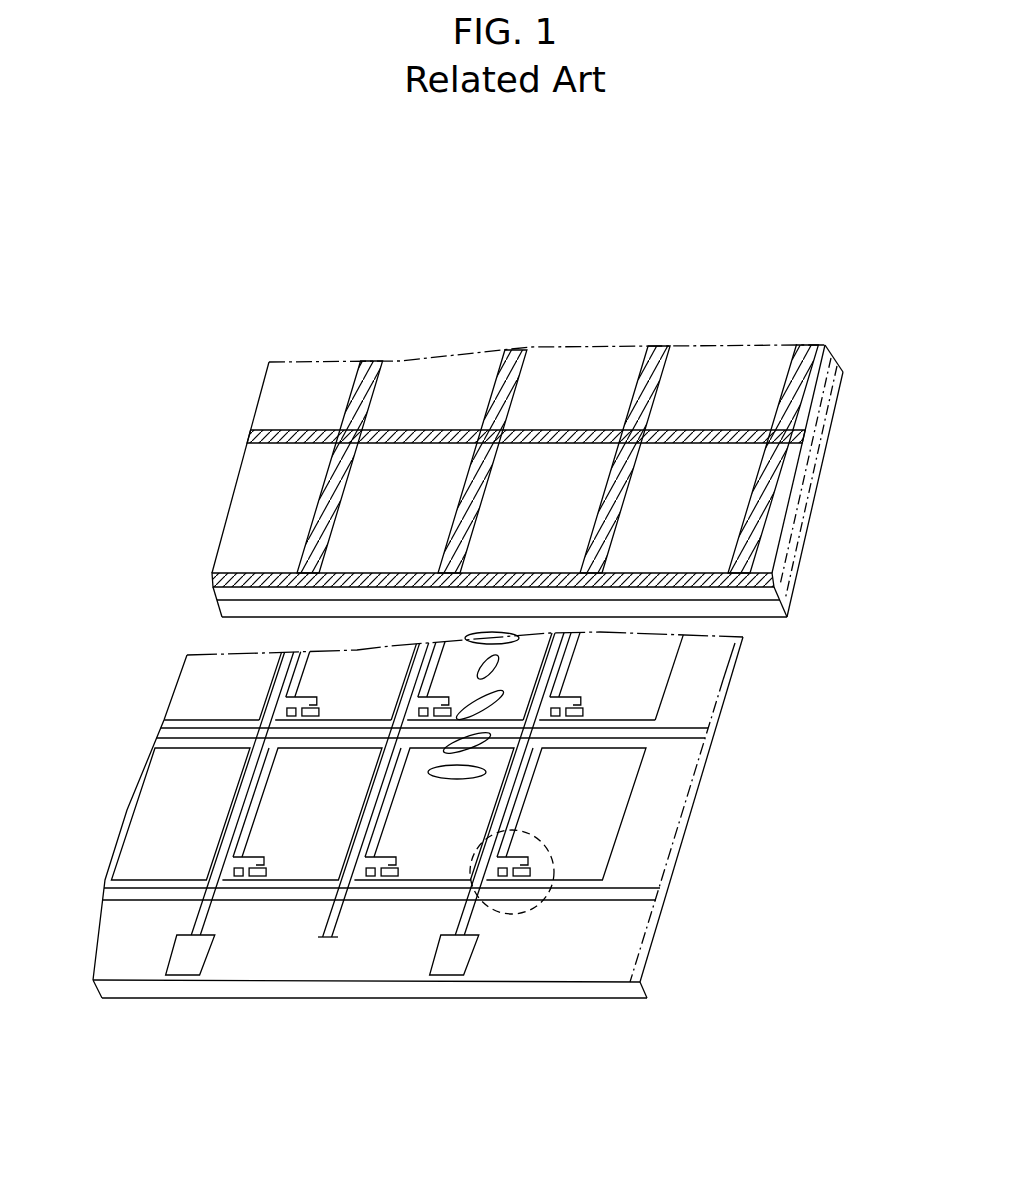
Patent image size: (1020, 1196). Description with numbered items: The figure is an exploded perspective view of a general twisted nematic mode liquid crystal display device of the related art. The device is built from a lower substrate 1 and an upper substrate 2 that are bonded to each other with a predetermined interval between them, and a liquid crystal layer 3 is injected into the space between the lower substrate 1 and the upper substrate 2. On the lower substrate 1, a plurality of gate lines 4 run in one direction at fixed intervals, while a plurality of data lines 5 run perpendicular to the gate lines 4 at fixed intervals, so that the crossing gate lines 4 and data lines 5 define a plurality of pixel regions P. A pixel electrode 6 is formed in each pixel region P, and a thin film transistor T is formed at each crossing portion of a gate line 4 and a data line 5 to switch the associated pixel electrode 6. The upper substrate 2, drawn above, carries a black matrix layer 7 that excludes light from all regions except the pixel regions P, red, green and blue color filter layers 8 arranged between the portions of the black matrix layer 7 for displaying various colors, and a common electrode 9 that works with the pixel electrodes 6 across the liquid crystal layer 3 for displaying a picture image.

The lower substrate 1 is at (605, 988).
The upper substrate 2 is at (767, 593).
The liquid crystal layer 3 is at (470, 722).
The gate line 4 is at (621, 896).
The data line 5 is at (468, 918).
The pixel electrode 6 is at (623, 826).
The black matrix layer 7 is at (807, 436).
The R/G/B color filter layer 8 is at (473, 363).
The common electrode 9 is at (767, 610).
The pixel region P is at (668, 782).
The thin film transistor T is at (513, 914).